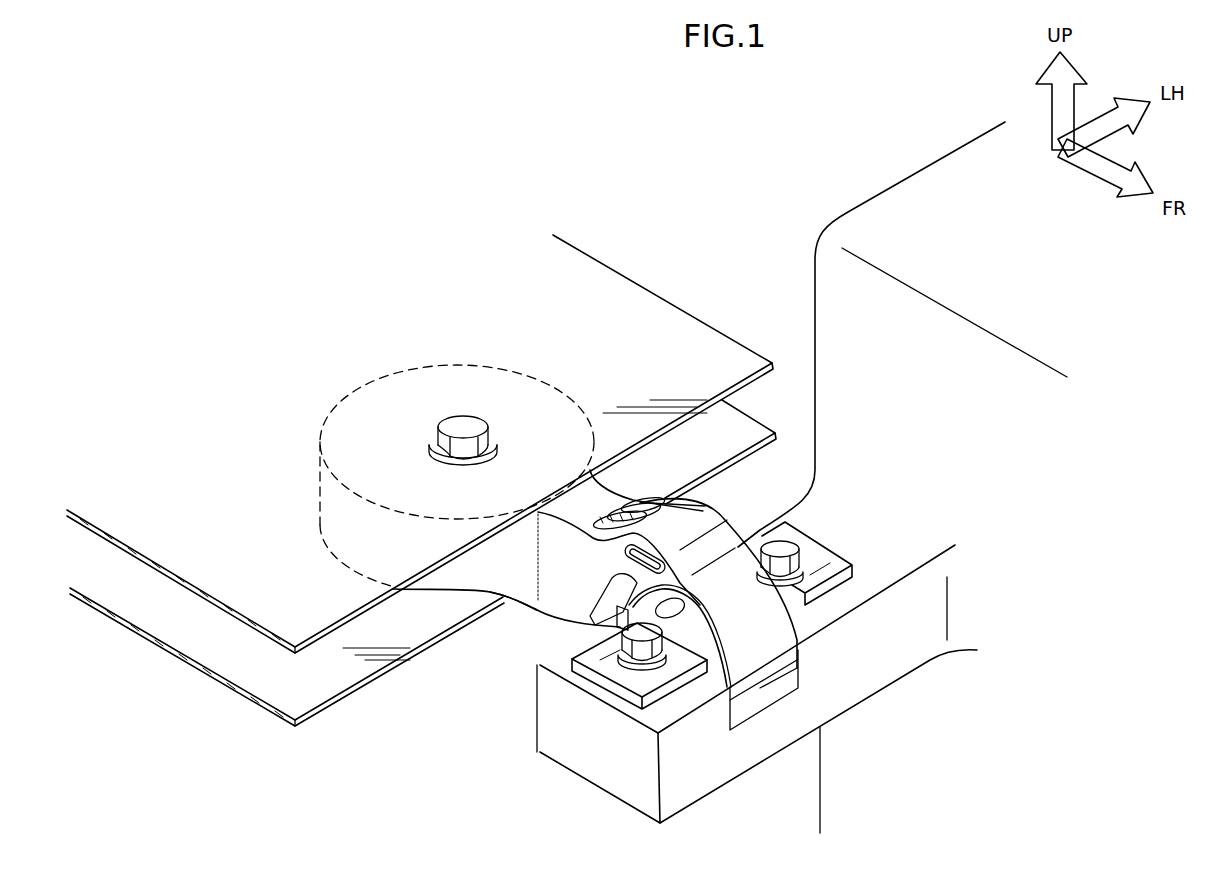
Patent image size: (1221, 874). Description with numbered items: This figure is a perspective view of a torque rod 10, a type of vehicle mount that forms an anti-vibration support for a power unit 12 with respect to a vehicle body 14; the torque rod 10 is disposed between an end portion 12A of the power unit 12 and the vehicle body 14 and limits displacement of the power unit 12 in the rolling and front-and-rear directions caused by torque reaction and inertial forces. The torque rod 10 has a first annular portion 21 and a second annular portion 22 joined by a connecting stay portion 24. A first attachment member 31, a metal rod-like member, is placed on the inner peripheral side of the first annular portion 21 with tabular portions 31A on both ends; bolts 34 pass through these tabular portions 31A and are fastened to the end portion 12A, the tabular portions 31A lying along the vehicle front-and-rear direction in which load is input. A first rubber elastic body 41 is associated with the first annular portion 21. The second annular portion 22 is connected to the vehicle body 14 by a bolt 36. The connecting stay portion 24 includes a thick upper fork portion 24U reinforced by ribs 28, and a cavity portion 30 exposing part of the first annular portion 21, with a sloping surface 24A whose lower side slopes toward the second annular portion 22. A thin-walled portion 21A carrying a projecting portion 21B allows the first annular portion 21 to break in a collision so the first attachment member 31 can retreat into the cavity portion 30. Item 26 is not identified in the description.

The torque rod 10 is at (455, 650).
The power unit 12 is at (838, 216).
The end portion of the power unit 12A is at (767, 760).
The vehicle body 14 is at (325, 633).
The first annular portion 21 is at (809, 628).
The thin-walled portion 21A is at (625, 562).
The projecting portion 21B is at (617, 590).
The second annular portion 22 is at (507, 372).
The connecting stay portion 24 is at (533, 613).
The sloping surface 24A is at (560, 588).
The upper fork portion 24U is at (707, 507).
The gap between panels 26 is at (443, 603).
The ribs 28 is at (637, 500).
The cavity portion 30 is at (560, 628).
The first attachment member 31 is at (623, 703).
The tabular portions 31A is at (655, 676).
The bolts 34 is at (622, 697).
The bolt 36 is at (453, 414).
The first rubber elastic body 41 is at (685, 610).